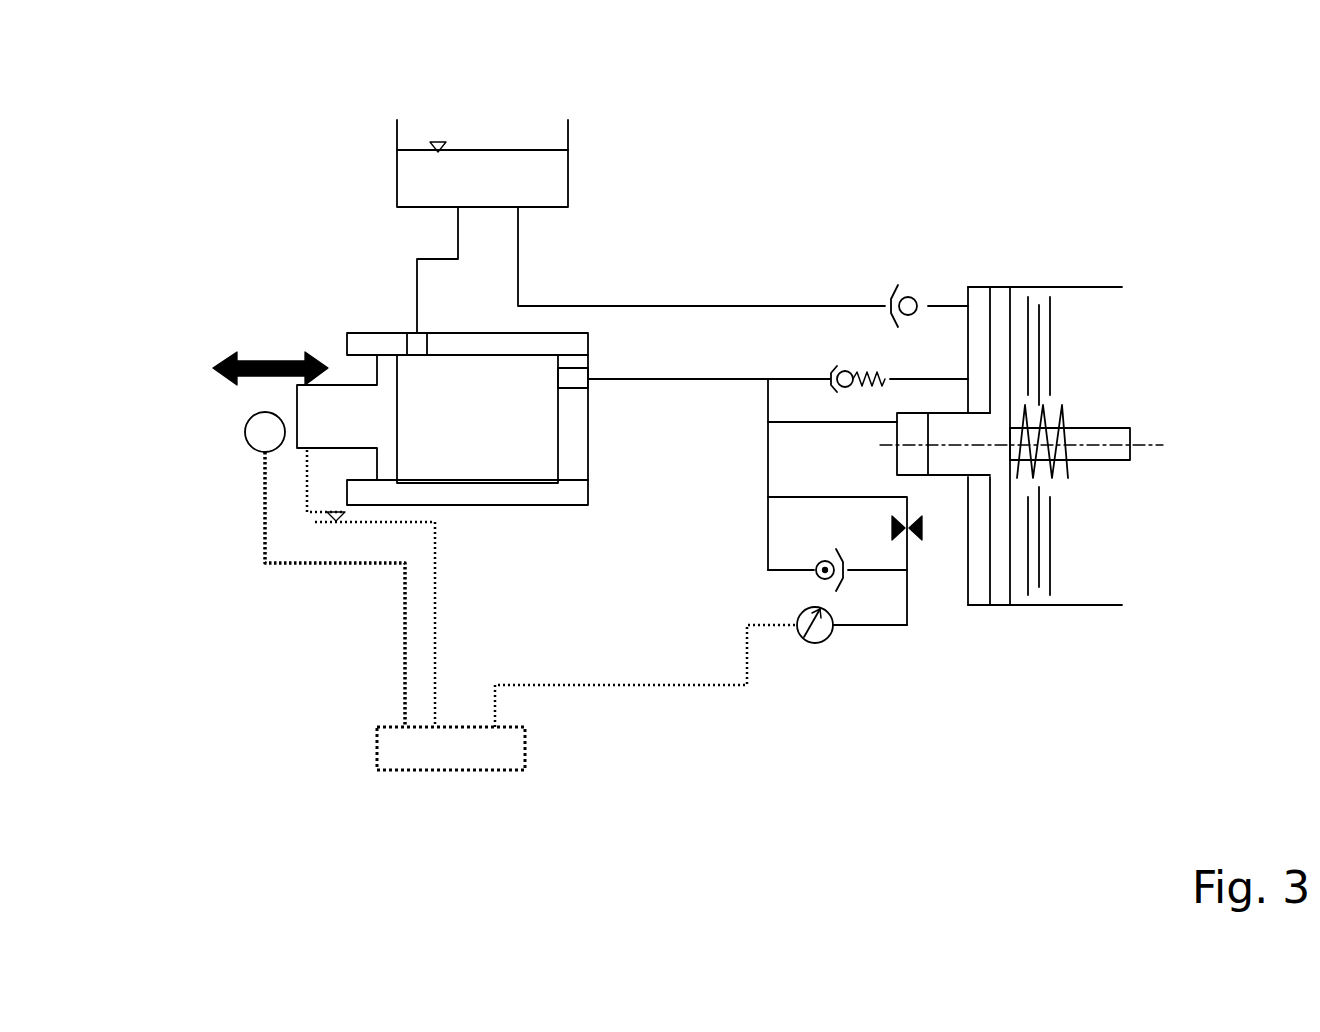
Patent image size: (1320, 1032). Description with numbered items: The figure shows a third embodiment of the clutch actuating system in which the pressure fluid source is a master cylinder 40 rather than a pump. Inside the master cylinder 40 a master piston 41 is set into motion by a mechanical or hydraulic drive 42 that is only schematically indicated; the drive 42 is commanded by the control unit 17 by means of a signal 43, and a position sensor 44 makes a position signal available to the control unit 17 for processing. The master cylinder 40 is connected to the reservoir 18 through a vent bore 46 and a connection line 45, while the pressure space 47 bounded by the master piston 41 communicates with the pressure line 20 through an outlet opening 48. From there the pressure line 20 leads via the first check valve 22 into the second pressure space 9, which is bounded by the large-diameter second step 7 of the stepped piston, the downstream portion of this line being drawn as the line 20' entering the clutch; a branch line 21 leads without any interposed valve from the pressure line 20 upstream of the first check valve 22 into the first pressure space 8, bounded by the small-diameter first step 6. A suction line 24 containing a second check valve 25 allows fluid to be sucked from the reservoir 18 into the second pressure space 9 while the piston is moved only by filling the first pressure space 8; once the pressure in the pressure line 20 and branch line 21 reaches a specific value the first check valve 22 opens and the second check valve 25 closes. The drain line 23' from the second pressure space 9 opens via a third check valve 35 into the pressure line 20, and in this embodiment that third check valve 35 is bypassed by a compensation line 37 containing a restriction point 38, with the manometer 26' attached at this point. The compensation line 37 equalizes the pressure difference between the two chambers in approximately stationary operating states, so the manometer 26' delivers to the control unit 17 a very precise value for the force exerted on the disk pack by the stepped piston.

The first step 6 is at (948, 455).
The second step 7 is at (998, 317).
The first pressure space 8 is at (915, 455).
The second pressure space 9 is at (978, 300).
The control unit 17 is at (405, 745).
The reservoir 18 is at (488, 188).
The pressure line 20 is at (737, 205).
The hydraulic line 20' is at (1003, 205).
The branch line 21 is at (768, 421).
The first check valve 22 is at (845, 379).
The drain line 23' is at (901, 726).
The suction line 24 is at (687, 304).
The second check valve 25 is at (908, 306).
The manometer 26' is at (701, 744).
The third check valve 35 is at (830, 588).
The compensation line 37 is at (768, 497).
The restriction point 38 is at (903, 545).
The master cylinder 40 is at (510, 347).
The master piston 41 is at (363, 408).
The drive 42 is at (265, 432).
The signal 43 is at (278, 565).
The position sensor 44 is at (312, 517).
The connection line 45 is at (413, 262).
The vent bore 46 is at (413, 342).
The pressure space 47 is at (477, 419).
The outlet opening 48 is at (575, 373).